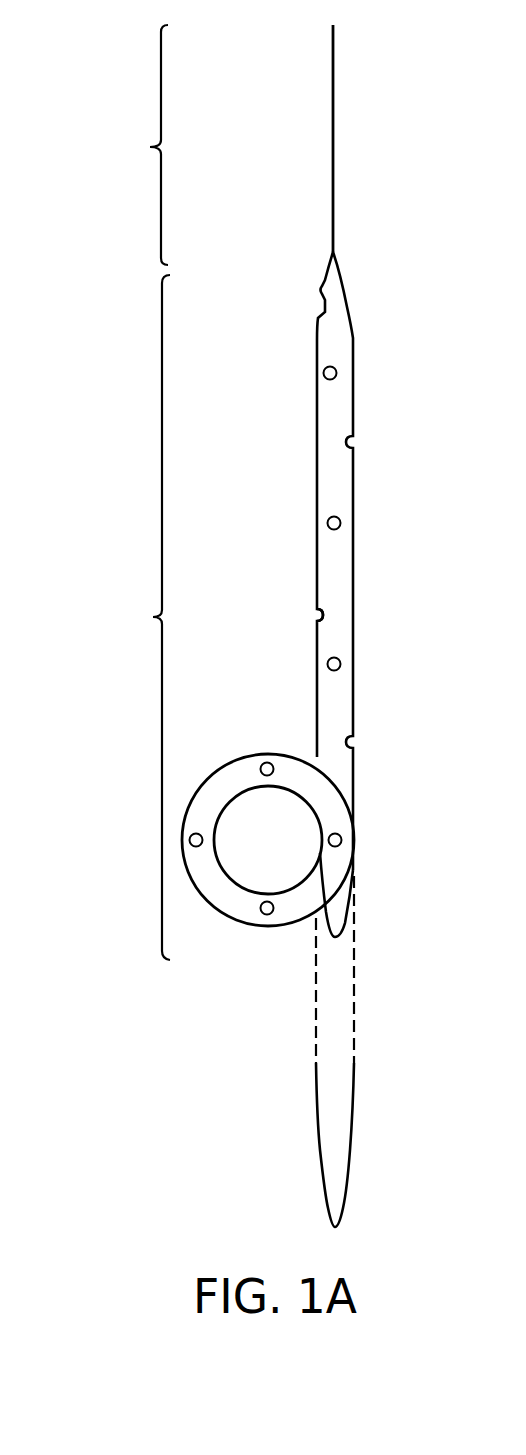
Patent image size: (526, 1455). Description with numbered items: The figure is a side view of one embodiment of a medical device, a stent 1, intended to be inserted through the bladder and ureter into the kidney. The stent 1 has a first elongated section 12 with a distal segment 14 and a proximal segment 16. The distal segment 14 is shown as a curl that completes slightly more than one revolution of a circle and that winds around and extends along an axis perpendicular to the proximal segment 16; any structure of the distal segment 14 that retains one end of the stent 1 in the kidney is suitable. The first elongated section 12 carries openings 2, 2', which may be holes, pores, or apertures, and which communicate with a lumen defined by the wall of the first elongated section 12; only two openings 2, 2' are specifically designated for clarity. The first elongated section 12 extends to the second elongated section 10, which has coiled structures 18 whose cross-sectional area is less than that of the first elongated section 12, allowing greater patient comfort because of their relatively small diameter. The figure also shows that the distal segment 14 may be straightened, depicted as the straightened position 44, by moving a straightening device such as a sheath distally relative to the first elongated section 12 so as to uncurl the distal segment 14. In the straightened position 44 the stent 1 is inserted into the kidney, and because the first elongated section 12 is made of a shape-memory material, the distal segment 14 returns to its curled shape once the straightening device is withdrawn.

The stent 1 is at (78, 353).
The second elongated section 10 is at (139, 145).
The first elongated section 12 is at (140, 617).
The distal segment 14 is at (232, 760).
The proximal segment 16 is at (315, 528).
The coiled structure 18 is at (332, 77).
The opening 2 is at (313, 652).
The opening 2' is at (298, 596).
The straightened position 44 is at (315, 1073).